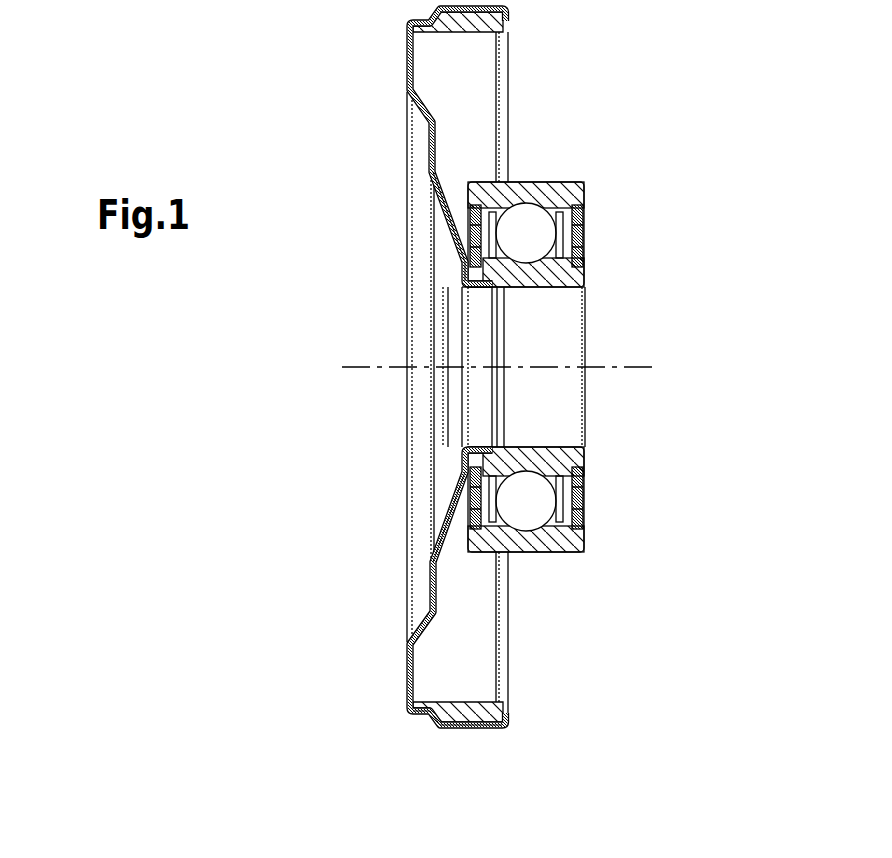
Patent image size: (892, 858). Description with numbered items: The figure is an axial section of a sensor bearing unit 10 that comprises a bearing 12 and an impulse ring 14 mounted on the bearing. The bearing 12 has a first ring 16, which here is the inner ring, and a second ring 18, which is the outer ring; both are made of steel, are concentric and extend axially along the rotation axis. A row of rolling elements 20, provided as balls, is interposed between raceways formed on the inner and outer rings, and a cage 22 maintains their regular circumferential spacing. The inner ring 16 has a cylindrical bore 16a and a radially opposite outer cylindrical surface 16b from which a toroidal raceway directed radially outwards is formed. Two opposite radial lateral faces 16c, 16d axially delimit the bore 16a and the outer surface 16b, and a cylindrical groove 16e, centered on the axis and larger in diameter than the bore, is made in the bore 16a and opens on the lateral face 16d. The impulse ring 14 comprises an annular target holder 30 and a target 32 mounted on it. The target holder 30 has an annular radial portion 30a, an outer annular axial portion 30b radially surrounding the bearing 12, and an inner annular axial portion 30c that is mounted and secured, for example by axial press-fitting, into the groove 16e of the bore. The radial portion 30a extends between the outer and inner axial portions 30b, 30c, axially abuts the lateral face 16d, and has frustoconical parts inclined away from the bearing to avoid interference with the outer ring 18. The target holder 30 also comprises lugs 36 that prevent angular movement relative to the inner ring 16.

The sensor bearing unit 10 is at (556, 50).
The bearing 12 is at (582, 150).
The impulse ring 14 is at (383, 58).
The first ring 16 is at (584, 456).
The bore 16a is at (567, 288).
The outer cylindrical surface 16b is at (585, 228).
The radial lateral face 16c is at (585, 272).
The radial lateral face 16d is at (462, 458).
The cylindrical groove 16e is at (481, 300).
The second ring 18 is at (557, 538).
The rolling elements 20 is at (542, 513).
The cage 22 is at (584, 505).
The target holder 30 is at (419, 575).
The radial portion 30a is at (450, 505).
The outer annular axial portion 30b is at (467, 727).
The inner annular axial portion 30c is at (480, 296).
The target 32 is at (464, 680).
The lugs 36 is at (467, 297).